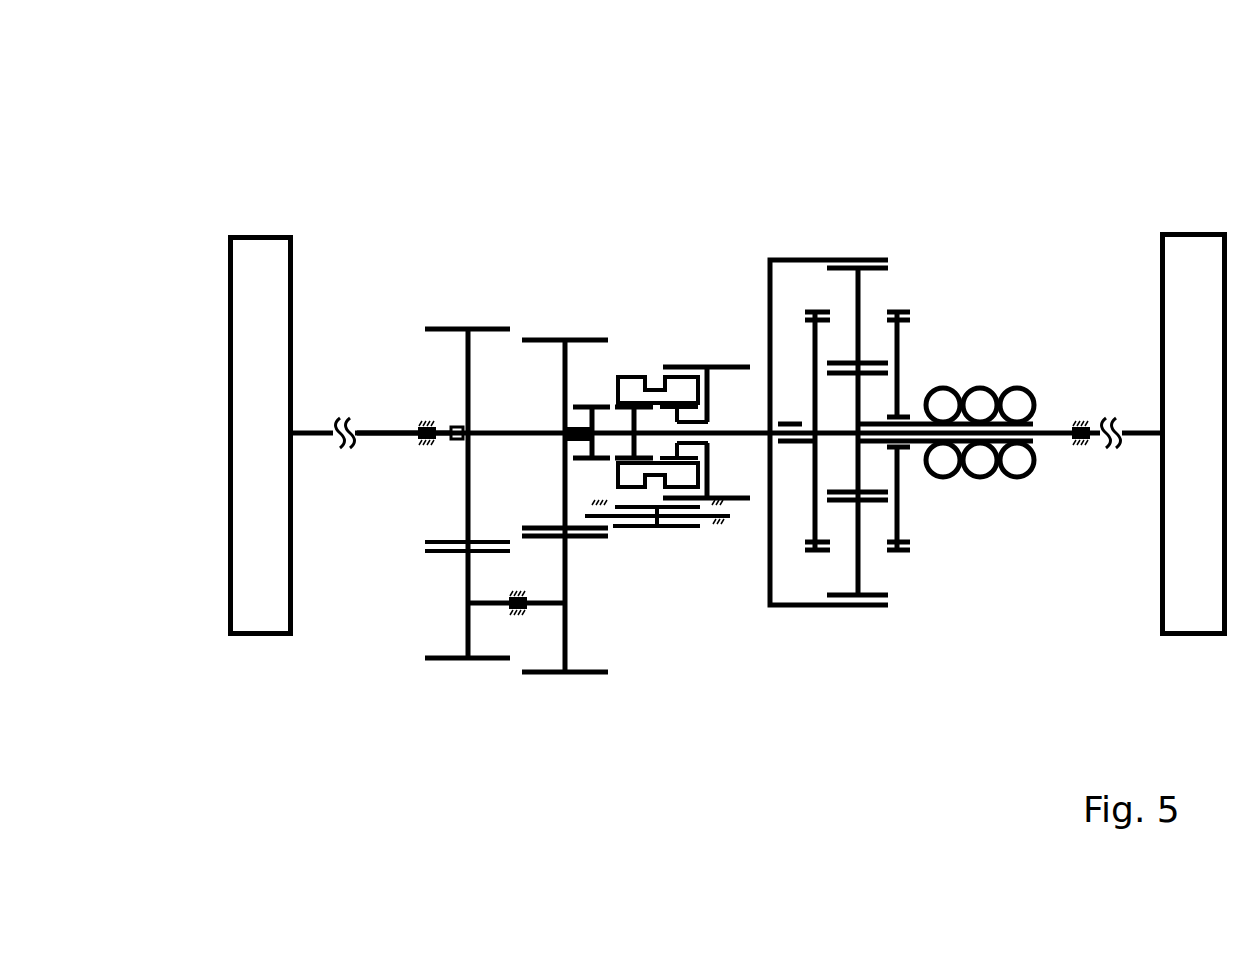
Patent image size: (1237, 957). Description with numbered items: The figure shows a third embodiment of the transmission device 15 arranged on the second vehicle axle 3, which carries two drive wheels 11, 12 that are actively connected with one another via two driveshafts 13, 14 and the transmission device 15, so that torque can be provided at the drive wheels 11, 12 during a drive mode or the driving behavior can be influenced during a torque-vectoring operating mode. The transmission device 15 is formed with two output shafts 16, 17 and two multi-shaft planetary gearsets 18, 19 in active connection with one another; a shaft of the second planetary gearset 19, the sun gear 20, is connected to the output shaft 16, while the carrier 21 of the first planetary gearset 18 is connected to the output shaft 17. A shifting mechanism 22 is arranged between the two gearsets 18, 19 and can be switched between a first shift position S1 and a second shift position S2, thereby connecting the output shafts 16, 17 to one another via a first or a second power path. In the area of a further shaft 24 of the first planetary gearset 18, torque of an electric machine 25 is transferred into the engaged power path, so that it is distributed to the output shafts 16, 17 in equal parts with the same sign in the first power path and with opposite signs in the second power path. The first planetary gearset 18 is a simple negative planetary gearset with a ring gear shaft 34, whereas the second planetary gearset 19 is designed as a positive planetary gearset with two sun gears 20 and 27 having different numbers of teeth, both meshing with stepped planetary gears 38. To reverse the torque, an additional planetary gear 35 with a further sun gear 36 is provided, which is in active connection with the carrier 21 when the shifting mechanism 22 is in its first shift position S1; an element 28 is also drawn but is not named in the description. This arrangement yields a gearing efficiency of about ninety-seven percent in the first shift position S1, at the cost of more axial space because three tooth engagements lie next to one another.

The second vehicle axle 3 is at (843, 407).
The drive wheel 11 is at (270, 234).
The drive wheel 12 is at (1195, 232).
The driveshaft 13 is at (320, 428).
The driveshaft 14 is at (1135, 428).
The transmission device 15 is at (410, 128).
The output shaft 16 is at (378, 428).
The output shaft 17 is at (1050, 426).
The first planetary gearset 18 is at (866, 250).
The second planetary gearset 19 is at (426, 497).
The sun gear 20 is at (465, 477).
The carrier 21 is at (813, 518).
The shifting mechanism 22 is at (632, 390).
The further shaft 24 is at (923, 418).
The electric machine 25 is at (991, 371).
The sun gear 27 is at (565, 492).
The bearing 28 is at (517, 627).
The shaft 34 is at (812, 258).
The additional planetary gear 35 is at (677, 530).
The further sun gear 36 is at (718, 365).
The stepped planetary gears 38 is at (466, 672).
The first shift position S1 is at (681, 362).
The second shift position S2 is at (590, 392).